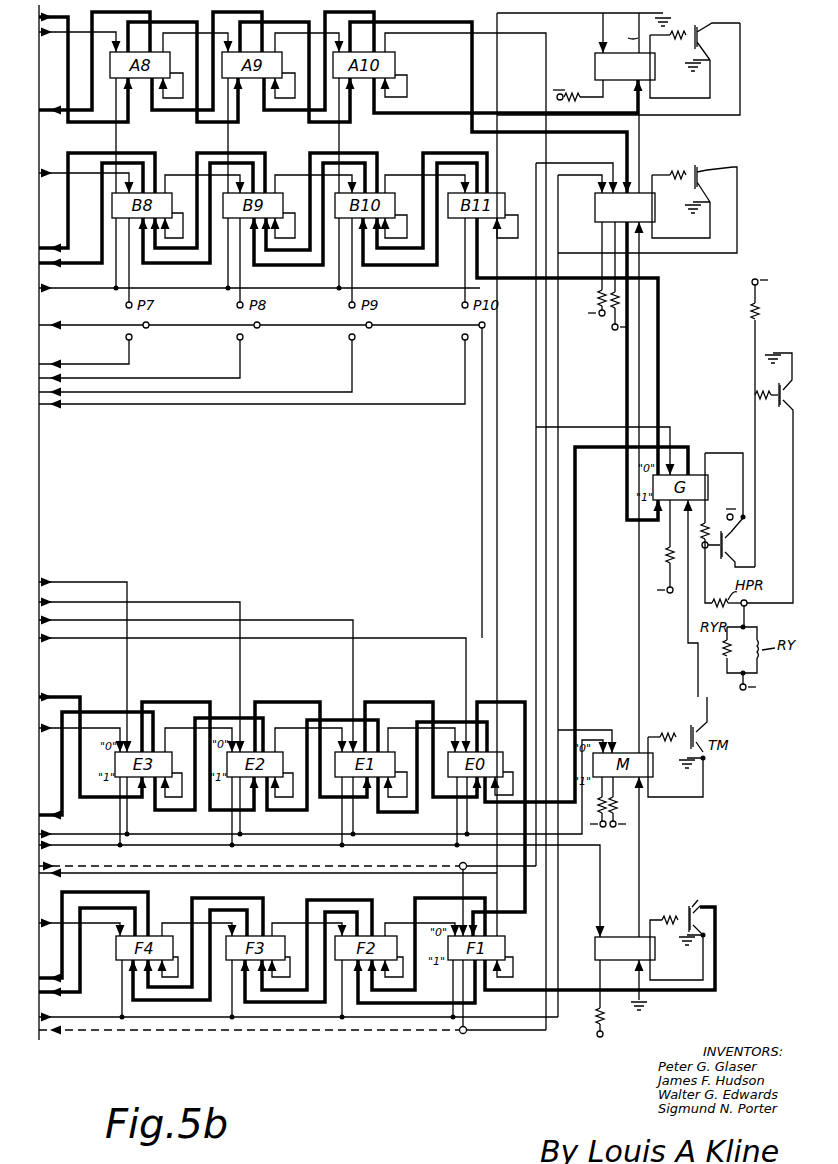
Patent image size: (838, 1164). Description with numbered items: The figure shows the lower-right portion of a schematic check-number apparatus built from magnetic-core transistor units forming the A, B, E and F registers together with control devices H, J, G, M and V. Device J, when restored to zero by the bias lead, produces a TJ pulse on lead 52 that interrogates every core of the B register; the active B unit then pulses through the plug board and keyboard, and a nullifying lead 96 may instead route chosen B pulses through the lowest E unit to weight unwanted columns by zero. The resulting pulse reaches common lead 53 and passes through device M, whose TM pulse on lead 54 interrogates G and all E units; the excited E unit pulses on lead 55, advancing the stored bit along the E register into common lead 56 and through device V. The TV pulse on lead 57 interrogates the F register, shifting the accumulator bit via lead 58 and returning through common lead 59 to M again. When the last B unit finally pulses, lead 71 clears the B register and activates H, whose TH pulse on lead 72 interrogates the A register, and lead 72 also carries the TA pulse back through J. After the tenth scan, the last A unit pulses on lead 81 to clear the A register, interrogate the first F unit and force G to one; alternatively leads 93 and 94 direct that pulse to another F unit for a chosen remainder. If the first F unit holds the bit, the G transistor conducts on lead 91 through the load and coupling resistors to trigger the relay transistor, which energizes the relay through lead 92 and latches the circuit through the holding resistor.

The lead 81 is at (408, 86).
The lead 72 is at (461, 474).
The lead 71 is at (500, 185).
The lead 52 is at (740, 197).
The nullifying lead 96 is at (155, 328).
The lead 55 is at (174, 735).
The common lead 53 is at (255, 838).
The common lead 56 is at (246, 843).
The lead 94 is at (432, 864).
The lead 58 is at (514, 968).
The common lead 59 is at (82, 1016).
The lead 93 is at (440, 1028).
The lead 54 is at (688, 636).
The lead 91 is at (765, 530).
The lead 92 is at (781, 460).
The lead 57 is at (717, 915).